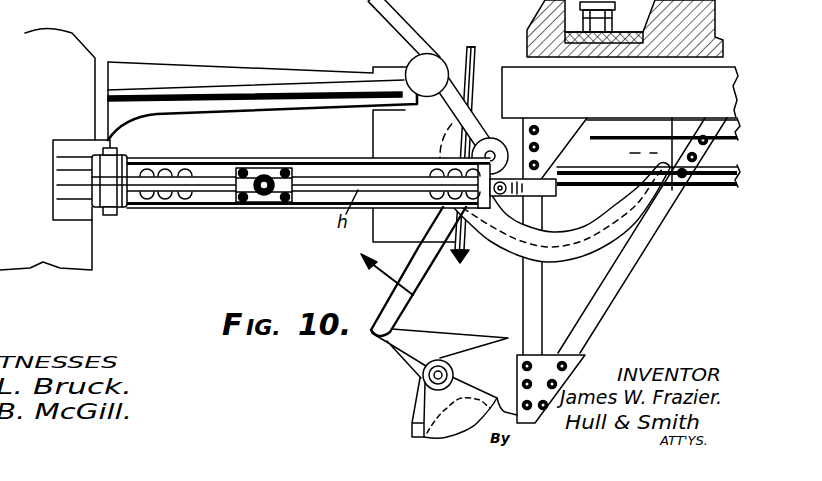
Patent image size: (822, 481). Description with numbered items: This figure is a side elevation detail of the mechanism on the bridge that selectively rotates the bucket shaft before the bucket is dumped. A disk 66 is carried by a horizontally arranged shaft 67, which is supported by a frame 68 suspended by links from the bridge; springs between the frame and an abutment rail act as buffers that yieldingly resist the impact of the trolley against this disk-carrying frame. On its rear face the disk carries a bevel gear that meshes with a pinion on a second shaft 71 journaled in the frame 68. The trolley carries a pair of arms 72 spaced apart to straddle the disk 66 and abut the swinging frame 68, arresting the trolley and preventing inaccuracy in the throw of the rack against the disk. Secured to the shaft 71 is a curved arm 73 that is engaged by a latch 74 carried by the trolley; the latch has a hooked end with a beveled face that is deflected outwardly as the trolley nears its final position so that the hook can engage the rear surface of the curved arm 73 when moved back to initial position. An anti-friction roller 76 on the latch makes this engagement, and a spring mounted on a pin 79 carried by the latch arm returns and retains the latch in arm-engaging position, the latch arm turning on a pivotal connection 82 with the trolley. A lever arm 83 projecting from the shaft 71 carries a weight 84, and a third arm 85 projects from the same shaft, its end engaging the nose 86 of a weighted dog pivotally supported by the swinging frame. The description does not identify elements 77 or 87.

The disk 66 is at (472, 50).
The shaft 67 is at (513, 138).
The frame 68 is at (718, 197).
The shaft 71 is at (482, 153).
The arms 72 is at (214, 73).
The curved arm 73 is at (587, 232).
The latch 74 is at (315, 203).
The anti-friction roller 76 is at (504, 202).
The bed block 77 is at (680, 22).
The pin 79 is at (275, 176).
The pivotal connection 82 is at (114, 150).
The lever arm 83 is at (453, 102).
The weight 84 is at (433, 57).
The third arm 85 is at (430, 263).
The nose 86 is at (396, 329).
The roller 87 is at (417, 408).